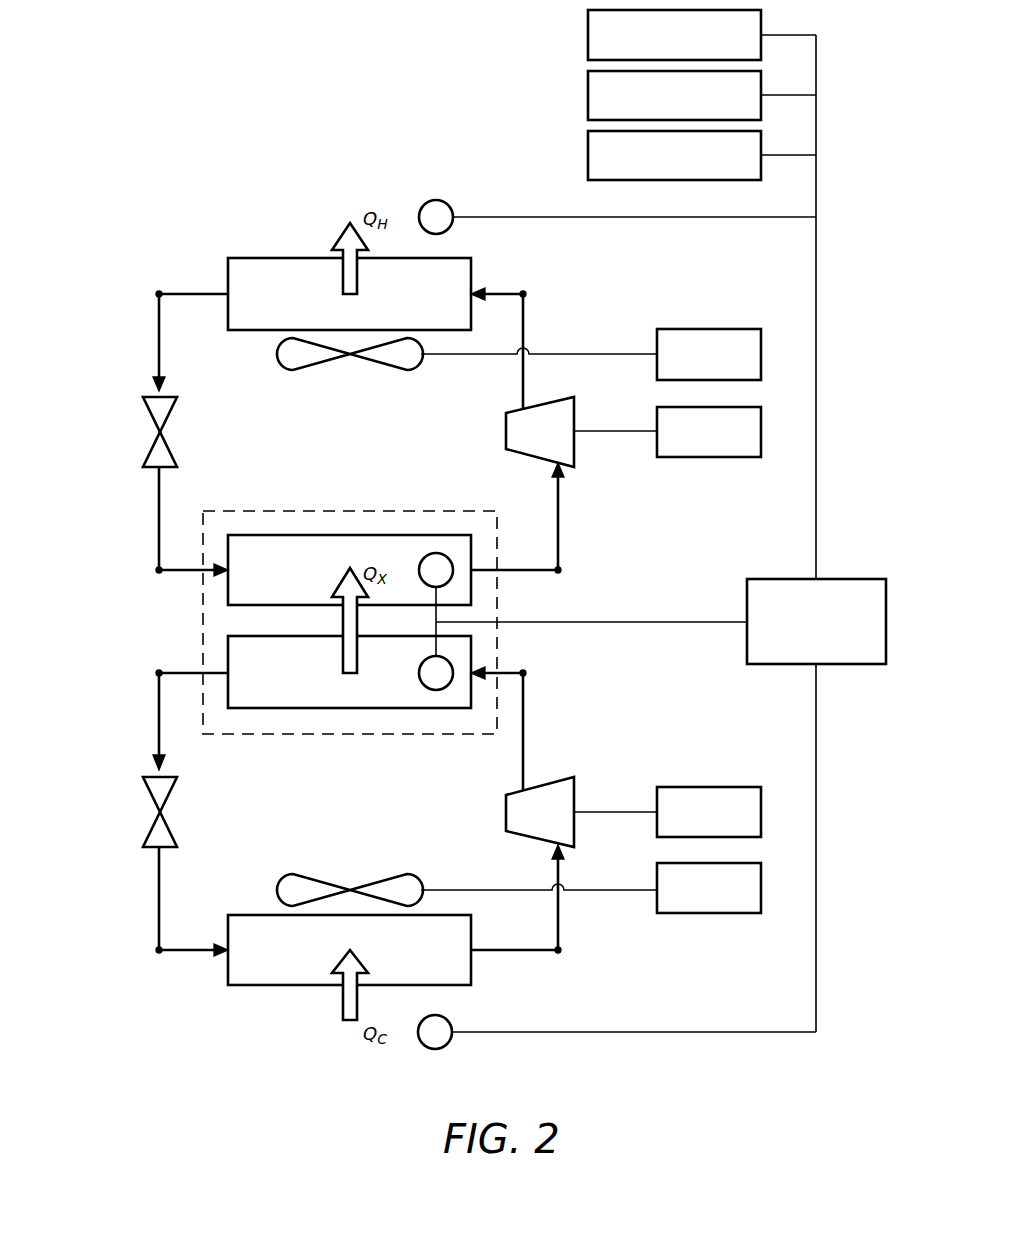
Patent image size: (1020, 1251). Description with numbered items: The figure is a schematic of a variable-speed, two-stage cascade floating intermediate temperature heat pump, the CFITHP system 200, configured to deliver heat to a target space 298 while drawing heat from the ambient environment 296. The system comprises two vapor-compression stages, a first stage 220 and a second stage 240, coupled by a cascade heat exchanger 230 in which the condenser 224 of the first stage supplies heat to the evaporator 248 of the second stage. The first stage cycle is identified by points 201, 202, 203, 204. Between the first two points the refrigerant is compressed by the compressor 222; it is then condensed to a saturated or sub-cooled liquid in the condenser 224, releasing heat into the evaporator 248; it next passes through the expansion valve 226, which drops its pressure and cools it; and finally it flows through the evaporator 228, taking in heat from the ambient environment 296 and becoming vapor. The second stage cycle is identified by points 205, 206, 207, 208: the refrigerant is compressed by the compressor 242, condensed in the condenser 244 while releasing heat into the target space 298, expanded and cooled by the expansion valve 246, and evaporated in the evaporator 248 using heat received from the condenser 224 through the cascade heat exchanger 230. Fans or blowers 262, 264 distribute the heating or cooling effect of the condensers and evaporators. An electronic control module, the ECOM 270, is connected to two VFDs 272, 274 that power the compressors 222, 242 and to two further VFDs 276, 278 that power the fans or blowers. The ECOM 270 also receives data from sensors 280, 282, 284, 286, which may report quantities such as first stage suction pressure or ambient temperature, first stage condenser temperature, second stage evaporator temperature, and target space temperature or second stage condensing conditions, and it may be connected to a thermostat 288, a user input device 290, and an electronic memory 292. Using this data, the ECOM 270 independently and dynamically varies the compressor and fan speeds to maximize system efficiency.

The CFITHP system 200 is at (162, 102).
The first stage cycle point 201 is at (558, 950).
The first stage cycle point 202 is at (523, 673).
The first stage cycle point 203 is at (159, 673).
The first stage cycle point 204 is at (159, 950).
The second stage cycle point 205 is at (558, 570).
The second stage cycle point 206 is at (523, 294).
The second stage cycle point 207 is at (159, 294).
The second stage cycle point 208 is at (159, 570).
The first stage 220 is at (333, 802).
The compressor 222 is at (574, 777).
The condenser 224 is at (372, 710).
The expansion valve 226 is at (150, 800).
The evaporator 228 is at (300, 985).
The cascade heat exchanger 230 is at (203, 603).
The second stage 240 is at (333, 442).
The compressor 242 is at (574, 467).
The condenser 244 is at (252, 258).
The expansion valve 246 is at (150, 416).
The evaporator 248 is at (347, 533).
The fan/blower 262 is at (373, 882).
The fan/blower 264 is at (372, 365).
The electronic control module (ECOM) 270 is at (661, 621).
The VFD 272 is at (667, 812).
The VFD 274 is at (667, 432).
The VFD 276 is at (709, 888).
The VFD 278 is at (709, 354).
The sensor 280 is at (447, 1044).
The sensor 282 is at (436, 690).
The sensor 284 is at (436, 553).
The sensor 286 is at (436, 200).
The thermostat 288 is at (702, 155).
The user input device 290 is at (702, 95).
The electronic memory 292 is at (702, 35).
The ambient environment 296 is at (333, 1088).
The target space 298 is at (332, 157).